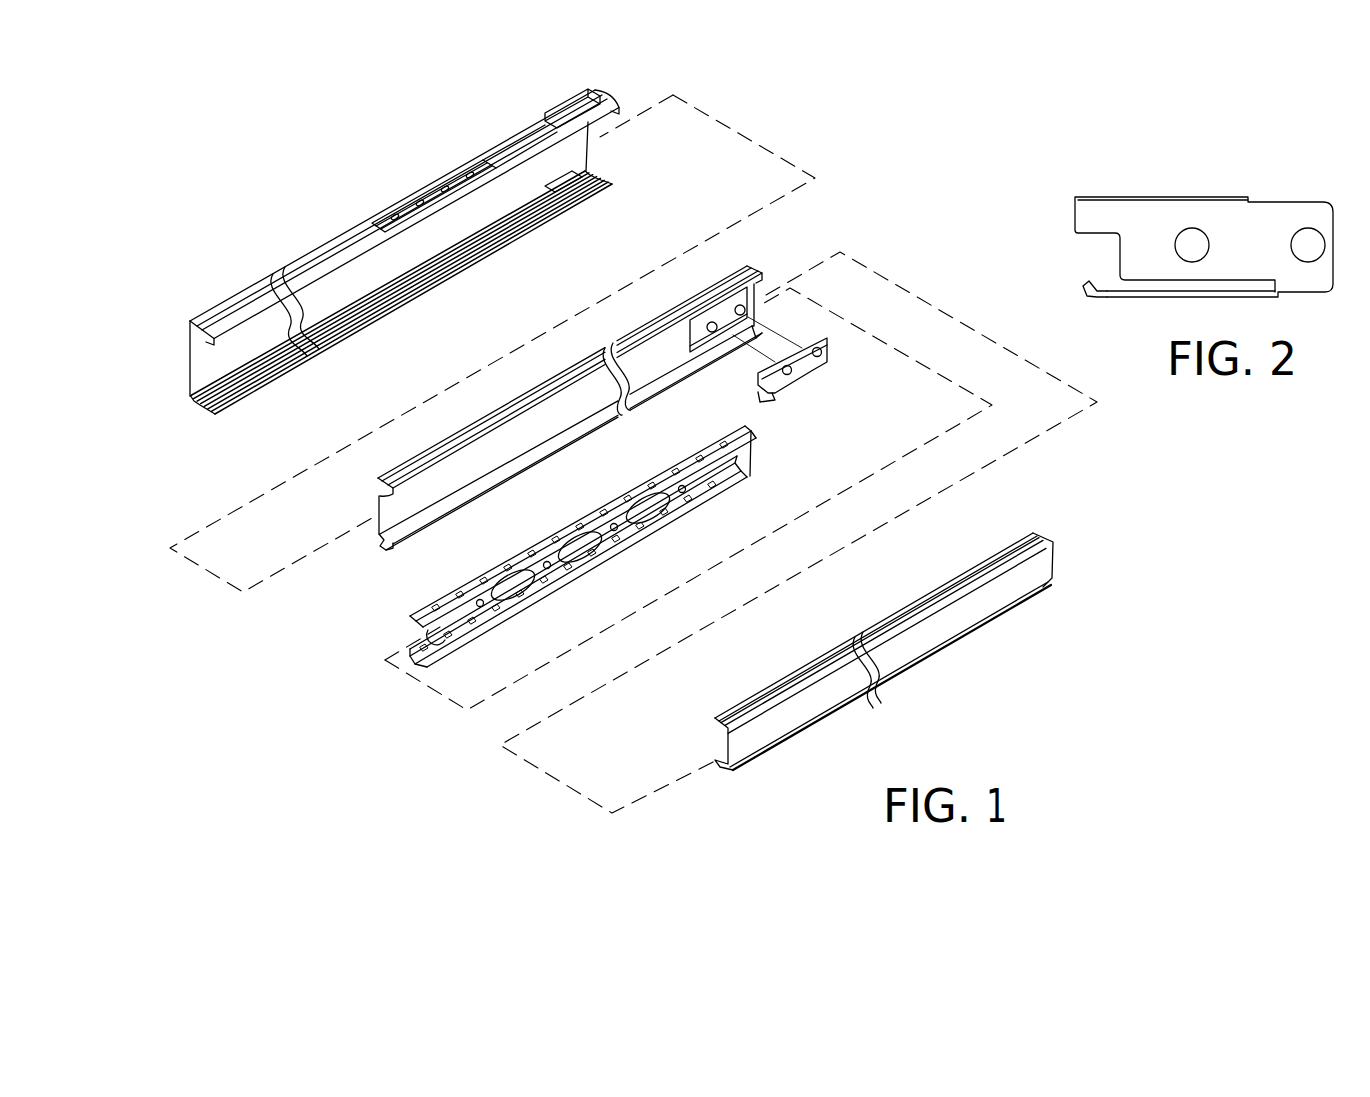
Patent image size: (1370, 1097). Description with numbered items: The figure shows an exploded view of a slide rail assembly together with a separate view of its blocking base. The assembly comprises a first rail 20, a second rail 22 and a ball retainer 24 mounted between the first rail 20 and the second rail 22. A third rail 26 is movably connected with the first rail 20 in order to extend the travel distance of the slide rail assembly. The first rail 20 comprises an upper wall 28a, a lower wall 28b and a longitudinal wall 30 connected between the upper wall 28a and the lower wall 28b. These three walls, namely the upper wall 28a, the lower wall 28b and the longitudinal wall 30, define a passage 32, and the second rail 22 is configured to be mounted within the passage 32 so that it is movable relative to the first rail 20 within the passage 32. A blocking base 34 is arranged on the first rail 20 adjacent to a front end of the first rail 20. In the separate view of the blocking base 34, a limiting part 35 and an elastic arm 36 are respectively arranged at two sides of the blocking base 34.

In FIG. 1, the first rail 20 is at (665, 307).
In FIG. 1, the second rail 22 is at (944, 582).
In FIG. 1, the ball retainer 24 is at (588, 508).
In FIG. 1, the third rail 26 is at (487, 142).
In FIG. 1, the upper wall 28a is at (433, 458).
In FIG. 1, the lower wall 28b is at (442, 515).
In FIG. 1, the longitudinal wall 30 is at (378, 512).
In FIG. 1, the passage 32 is at (510, 448).
In FIG. 1, the blocking base 34 is at (808, 392).
In FIG. 2, the blocking base 34 is at (1306, 160).
In FIG. 2, the limiting part 35 is at (1076, 197).
In FIG. 2, the elastic arm 36 is at (1097, 298).